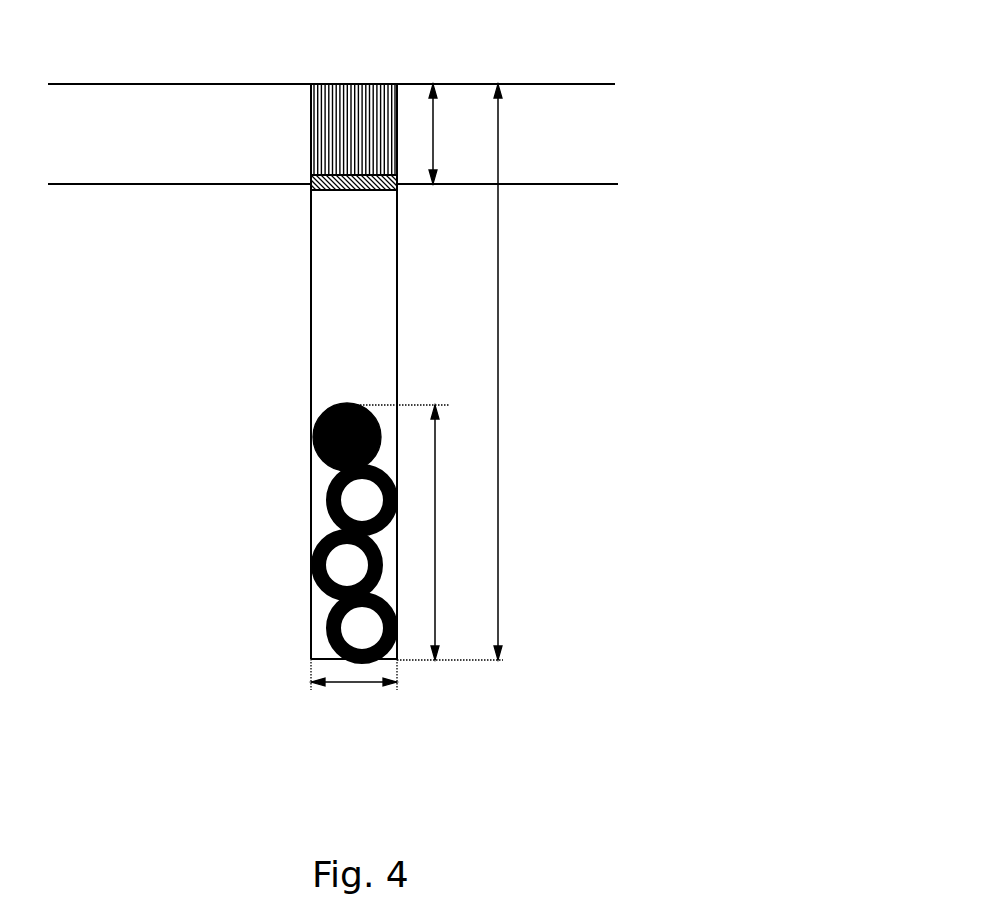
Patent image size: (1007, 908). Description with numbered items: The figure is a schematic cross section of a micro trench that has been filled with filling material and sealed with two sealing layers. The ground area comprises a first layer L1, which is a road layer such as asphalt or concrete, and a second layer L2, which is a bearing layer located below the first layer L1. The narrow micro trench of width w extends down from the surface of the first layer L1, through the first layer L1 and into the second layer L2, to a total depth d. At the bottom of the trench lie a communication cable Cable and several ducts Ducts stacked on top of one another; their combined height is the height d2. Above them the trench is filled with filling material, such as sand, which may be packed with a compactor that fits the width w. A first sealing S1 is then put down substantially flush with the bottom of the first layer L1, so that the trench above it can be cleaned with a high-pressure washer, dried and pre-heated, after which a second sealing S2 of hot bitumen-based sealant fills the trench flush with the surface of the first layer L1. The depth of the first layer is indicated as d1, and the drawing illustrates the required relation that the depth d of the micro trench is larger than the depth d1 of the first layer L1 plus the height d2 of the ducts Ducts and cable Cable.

The first layer L1 is at (333, 134).
The second layer L2 is at (99, 385).
The first sealing S1 is at (310, 190).
The second sealing S2 is at (337, 95).
The depth of the micro trench d is at (513, 372).
The depth of the first layer d1 is at (452, 134).
The height of the ducts or communication cable d2 is at (424, 532).
The width of the micro trench w is at (354, 683).
The communication cable Cable is at (312, 447).
The ducts Ducts is at (327, 628).